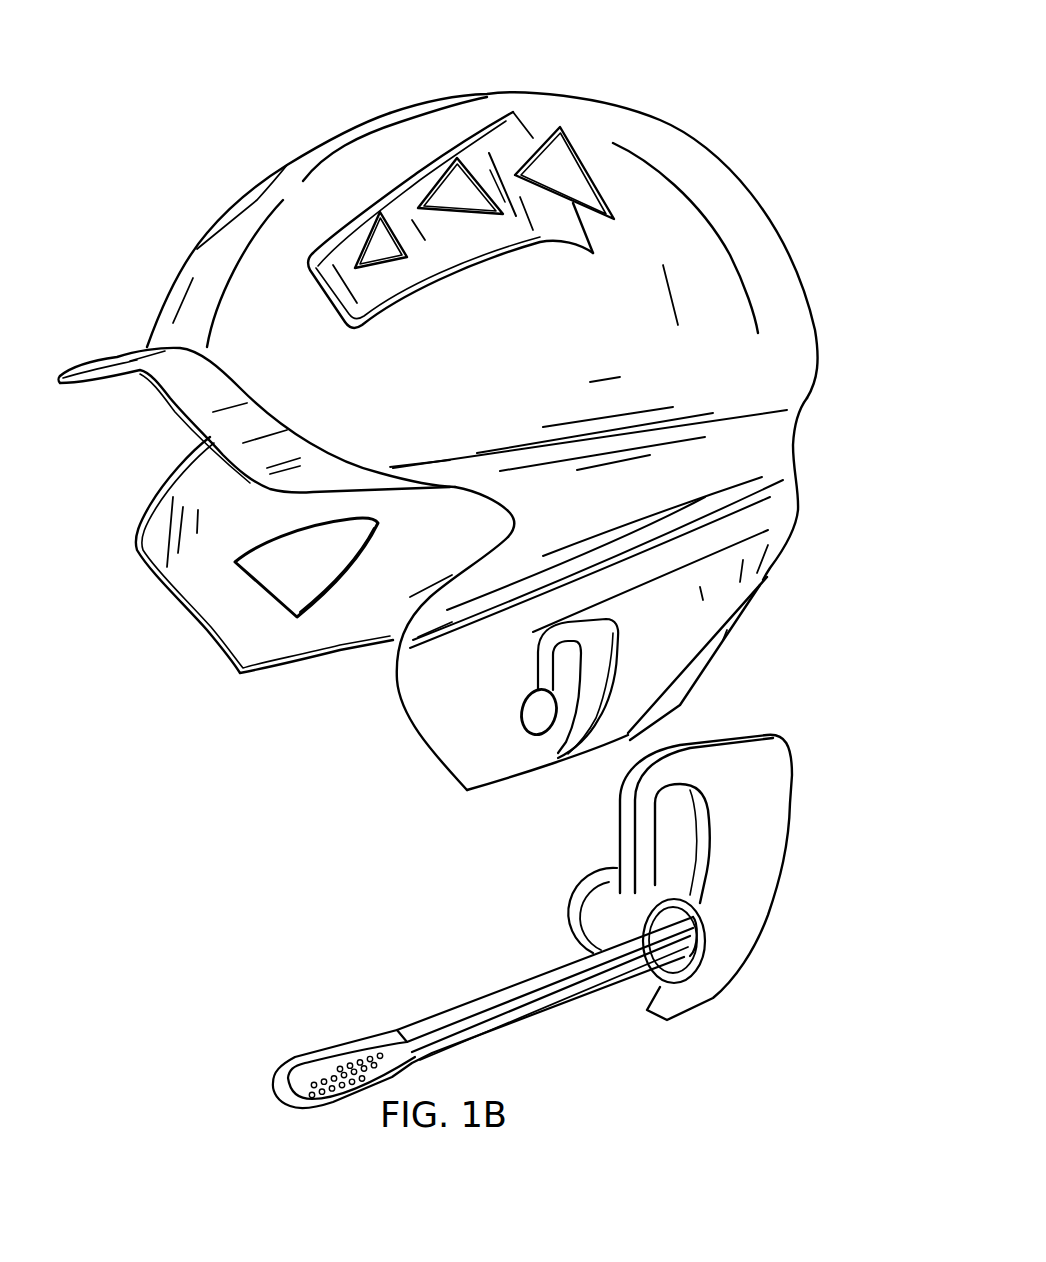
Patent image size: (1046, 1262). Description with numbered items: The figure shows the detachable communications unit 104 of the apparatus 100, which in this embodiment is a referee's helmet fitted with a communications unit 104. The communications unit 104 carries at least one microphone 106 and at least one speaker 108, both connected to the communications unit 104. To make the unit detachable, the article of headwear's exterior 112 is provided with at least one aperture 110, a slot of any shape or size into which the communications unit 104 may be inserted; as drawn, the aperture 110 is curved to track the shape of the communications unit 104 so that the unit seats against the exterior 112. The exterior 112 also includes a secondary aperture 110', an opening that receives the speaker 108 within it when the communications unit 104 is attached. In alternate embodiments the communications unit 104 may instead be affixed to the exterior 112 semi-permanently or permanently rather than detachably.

The apparatus 100 is at (688, 65).
The article of headwear's exterior 112 is at (187, 262).
The communications unit 104 is at (747, 737).
The microphone 106 is at (298, 1068).
The speaker 108 is at (576, 912).
The aperture 110 is at (578, 721).
The secondary aperture 110' is at (526, 760).